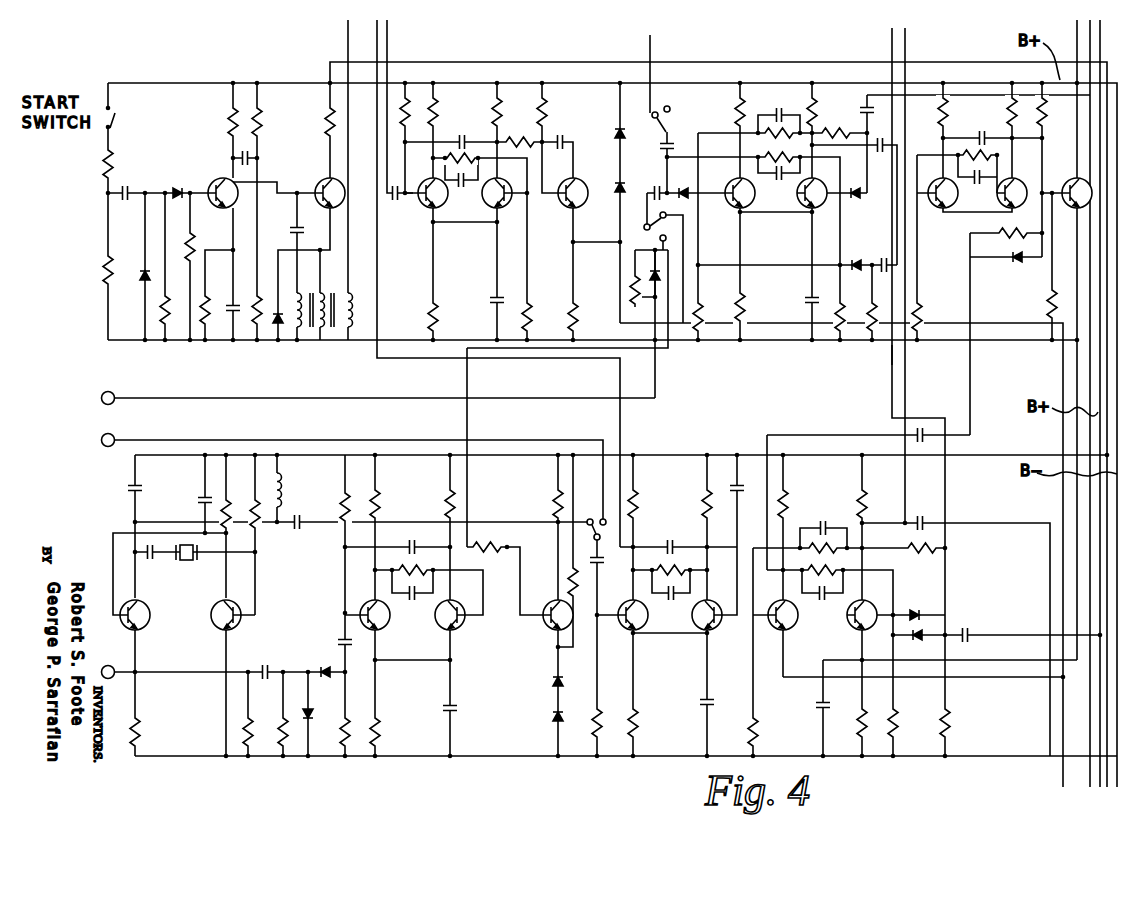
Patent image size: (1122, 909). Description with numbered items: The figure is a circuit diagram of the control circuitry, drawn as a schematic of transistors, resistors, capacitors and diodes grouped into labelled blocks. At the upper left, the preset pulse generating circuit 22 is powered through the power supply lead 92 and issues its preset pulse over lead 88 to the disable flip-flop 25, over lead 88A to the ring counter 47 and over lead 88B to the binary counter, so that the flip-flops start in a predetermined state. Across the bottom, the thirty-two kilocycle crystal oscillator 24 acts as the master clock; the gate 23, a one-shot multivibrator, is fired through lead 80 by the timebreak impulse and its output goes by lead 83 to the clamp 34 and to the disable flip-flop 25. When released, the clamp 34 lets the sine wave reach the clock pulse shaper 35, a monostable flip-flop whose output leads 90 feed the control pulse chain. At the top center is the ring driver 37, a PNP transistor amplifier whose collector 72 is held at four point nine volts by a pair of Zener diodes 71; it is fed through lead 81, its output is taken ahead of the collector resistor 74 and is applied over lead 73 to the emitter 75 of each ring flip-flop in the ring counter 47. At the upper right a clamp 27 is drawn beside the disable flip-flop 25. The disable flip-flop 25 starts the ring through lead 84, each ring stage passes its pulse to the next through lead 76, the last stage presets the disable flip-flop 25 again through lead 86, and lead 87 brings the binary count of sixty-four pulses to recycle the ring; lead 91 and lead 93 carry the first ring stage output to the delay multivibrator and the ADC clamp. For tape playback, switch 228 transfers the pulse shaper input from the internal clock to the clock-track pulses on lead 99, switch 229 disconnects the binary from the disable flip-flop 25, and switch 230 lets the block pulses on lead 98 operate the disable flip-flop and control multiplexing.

The preset pulse generating circuit 22 is at (227, 212).
The gate 23 is at (414, 606).
The 32 kc. crystal oscillator 24 is at (351, 606).
The disable flip-flop 25 is at (868, 212).
The clamp 27 is at (1001, 258).
The clamp 34 is at (523, 606).
The clock pulse shaper 35 is at (681, 606).
The ring driver 37 is at (510, 212).
The ring counter 47 is at (860, 397).
The Zener diodes 71 is at (618, 183).
The collector of the ring driver 72 is at (577, 198).
The lead 73 is at (762, 323).
The collector resistor 74 is at (570, 307).
The emitter 75 is at (776, 627).
The lead 76 is at (968, 523).
The lead 80 is at (123, 668).
The lead 81 is at (387, 53).
The lead 83 is at (465, 428).
The lead 84 is at (897, 355).
The lead 86 is at (1083, 553).
The lead 87 is at (652, 53).
The lead 88 is at (890, 40).
The lead 88A is at (1090, 500).
The lead 88B is at (347, 53).
The output leads 90 is at (376, 48).
The lead 91 is at (907, 53).
The power supply lead 92 is at (477, 63).
The lead 93 is at (767, 435).
The lead 98 is at (170, 397).
The lead 99 is at (182, 438).
The switch 228 is at (606, 530).
The switch 229 is at (672, 118).
The switch 230 is at (672, 228).